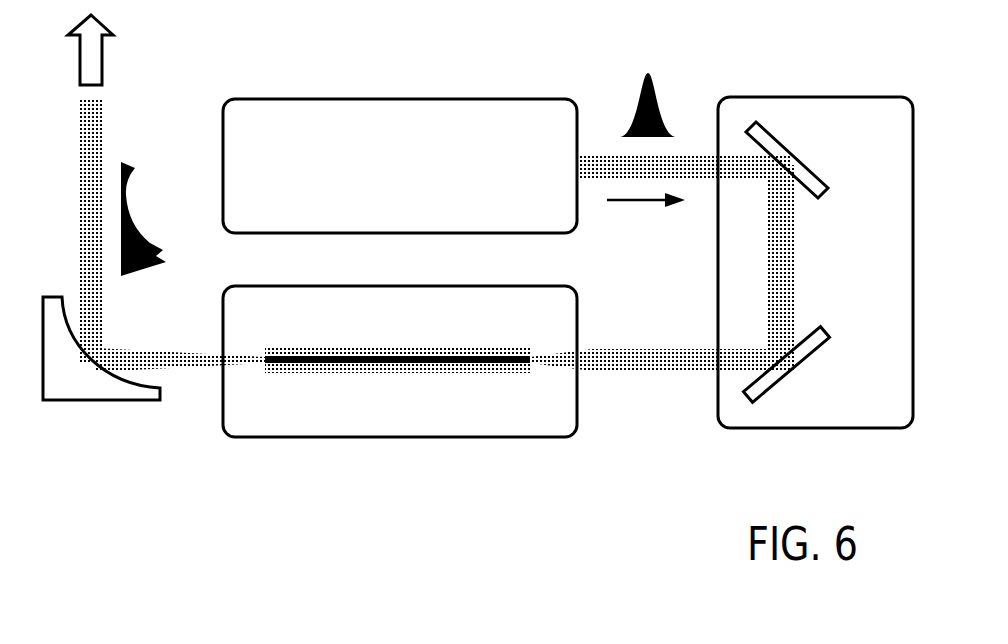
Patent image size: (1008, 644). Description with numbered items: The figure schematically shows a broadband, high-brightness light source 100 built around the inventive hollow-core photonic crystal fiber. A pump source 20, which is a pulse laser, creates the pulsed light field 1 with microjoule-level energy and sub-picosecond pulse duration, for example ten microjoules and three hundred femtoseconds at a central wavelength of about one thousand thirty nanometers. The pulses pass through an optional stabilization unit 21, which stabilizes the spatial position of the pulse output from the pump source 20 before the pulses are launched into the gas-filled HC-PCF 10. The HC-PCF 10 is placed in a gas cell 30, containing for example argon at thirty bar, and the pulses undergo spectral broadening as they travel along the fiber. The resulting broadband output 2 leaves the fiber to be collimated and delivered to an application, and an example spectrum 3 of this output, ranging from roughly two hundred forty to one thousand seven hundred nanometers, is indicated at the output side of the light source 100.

The pulsed light field 1 is at (612, 355).
The broadband output 2 is at (135, 360).
The example spectrum 3 is at (138, 224).
The HC-PCF 10 is at (418, 352).
The pump source 20 is at (400, 166).
The stabilization unit 21 is at (815, 262).
The gas cell 30 is at (400, 361).
The light source 100 is at (553, 49).